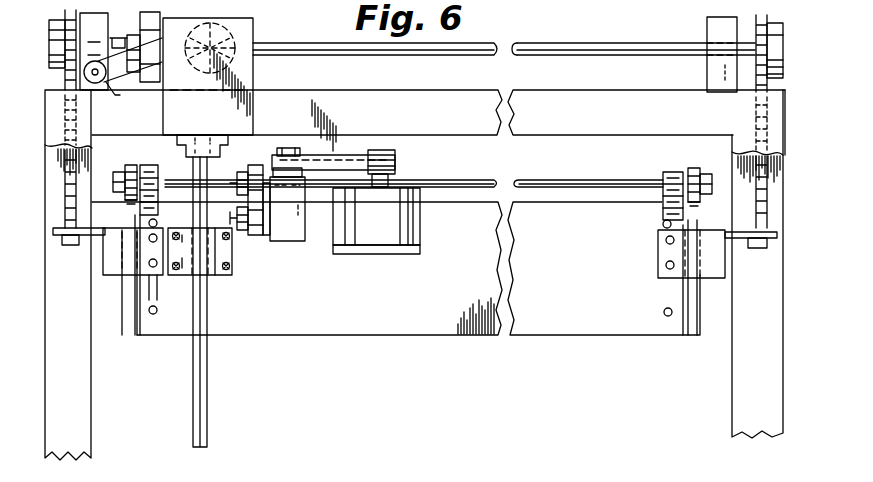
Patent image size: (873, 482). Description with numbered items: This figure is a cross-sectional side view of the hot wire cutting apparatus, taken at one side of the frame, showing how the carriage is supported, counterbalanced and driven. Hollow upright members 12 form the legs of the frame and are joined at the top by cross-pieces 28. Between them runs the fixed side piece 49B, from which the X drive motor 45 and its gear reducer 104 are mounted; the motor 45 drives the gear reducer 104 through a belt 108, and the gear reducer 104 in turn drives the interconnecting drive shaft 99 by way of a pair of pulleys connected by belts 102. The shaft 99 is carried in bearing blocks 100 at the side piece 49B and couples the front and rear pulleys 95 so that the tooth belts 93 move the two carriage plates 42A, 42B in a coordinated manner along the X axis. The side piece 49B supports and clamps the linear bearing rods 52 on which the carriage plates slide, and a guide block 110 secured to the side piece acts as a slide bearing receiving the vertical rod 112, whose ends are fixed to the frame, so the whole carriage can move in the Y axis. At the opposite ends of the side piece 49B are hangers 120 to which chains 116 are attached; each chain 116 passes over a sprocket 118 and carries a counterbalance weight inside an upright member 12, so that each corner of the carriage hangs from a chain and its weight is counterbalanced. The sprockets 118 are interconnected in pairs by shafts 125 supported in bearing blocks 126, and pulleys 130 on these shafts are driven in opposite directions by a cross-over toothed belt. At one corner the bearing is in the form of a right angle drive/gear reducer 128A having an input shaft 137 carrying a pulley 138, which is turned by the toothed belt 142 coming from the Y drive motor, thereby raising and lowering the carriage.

The upright member 12 is at (78, 416).
The cross-piece 28 is at (585, 105).
The X drive motor 45 is at (405, 225).
The side piece 49B is at (398, 325).
The carriage plate 42A is at (123, 318).
The carriage plate 42B is at (695, 322).
The interconnecting rod 52 is at (158, 314).
The tooth belt 93 is at (128, 202).
The pulley 95 is at (127, 172).
The shaft 99 is at (600, 178).
The bearing block 100 is at (148, 167).
The belt 102 is at (253, 165).
The gear reducer 104 is at (292, 235).
The belt 108 is at (343, 163).
The guide block 110 is at (218, 278).
The vertical rod 112 is at (203, 393).
The chain 116 is at (65, 82).
The sprocket 118 is at (57, 20).
The hanger 120 is at (82, 246).
The shaft 125 is at (320, 45).
The bearing block 126 is at (708, 30).
The bearing bracket 128A is at (108, 25).
The pulley 130 is at (162, 20).
The input shaft 137 is at (91, 82).
The pulley 138 is at (108, 93).
The belt 142 is at (127, 88).